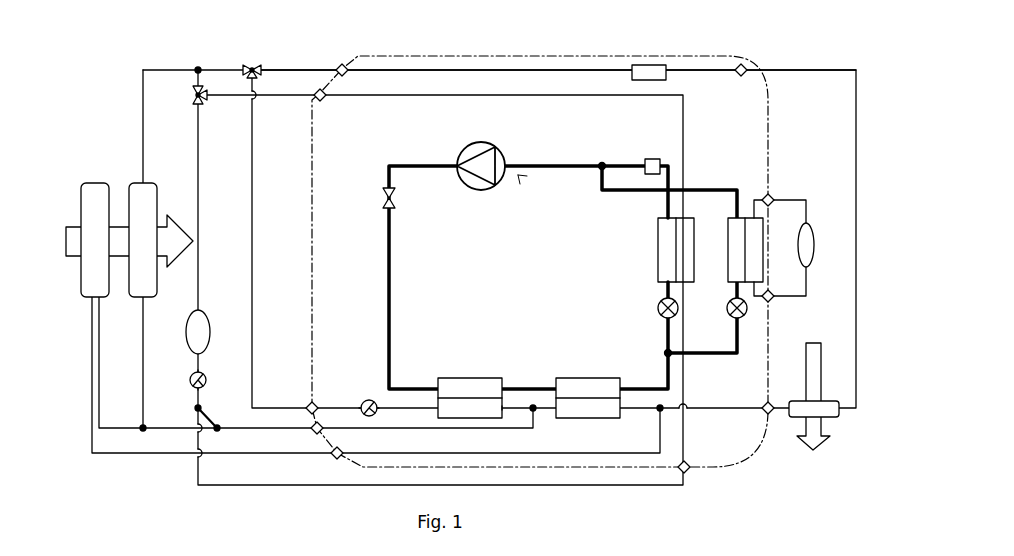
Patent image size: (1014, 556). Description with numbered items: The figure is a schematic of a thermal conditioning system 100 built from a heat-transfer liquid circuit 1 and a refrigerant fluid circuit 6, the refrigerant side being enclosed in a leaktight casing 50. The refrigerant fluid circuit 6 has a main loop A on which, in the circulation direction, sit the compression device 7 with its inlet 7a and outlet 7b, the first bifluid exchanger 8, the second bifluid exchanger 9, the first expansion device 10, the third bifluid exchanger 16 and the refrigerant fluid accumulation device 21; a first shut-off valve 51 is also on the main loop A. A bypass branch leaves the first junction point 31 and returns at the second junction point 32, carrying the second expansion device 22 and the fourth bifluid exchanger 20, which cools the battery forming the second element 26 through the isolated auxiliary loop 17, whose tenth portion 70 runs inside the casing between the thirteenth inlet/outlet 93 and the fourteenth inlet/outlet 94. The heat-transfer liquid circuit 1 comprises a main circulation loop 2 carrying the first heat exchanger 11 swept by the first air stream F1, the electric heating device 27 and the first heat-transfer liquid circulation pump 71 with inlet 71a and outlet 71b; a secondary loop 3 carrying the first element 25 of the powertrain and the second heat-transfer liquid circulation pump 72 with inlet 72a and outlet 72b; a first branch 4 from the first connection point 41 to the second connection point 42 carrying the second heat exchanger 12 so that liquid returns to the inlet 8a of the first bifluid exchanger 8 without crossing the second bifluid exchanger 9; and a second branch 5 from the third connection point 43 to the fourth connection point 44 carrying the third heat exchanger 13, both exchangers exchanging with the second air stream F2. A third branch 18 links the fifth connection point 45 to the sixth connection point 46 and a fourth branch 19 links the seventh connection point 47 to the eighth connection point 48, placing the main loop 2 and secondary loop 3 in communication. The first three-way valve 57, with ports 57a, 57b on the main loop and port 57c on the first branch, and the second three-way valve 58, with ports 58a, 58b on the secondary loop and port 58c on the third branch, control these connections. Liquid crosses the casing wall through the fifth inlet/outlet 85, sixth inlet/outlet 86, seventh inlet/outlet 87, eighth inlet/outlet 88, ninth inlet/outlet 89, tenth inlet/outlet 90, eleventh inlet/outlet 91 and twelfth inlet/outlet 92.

The thermal conditioning system 100 is at (433, 39).
The heat-transfer liquid circuit 1 is at (692, 105).
The main circulation loop 2 is at (854, 101).
The secondary loop 3 is at (440, 96).
The first branch 4 is at (141, 118).
The second branch 5 is at (90, 372).
The refrigerant fluid circuit 6 is at (521, 178).
The compression device 7 is at (476, 192).
The inlet of the compression device 7a is at (503, 160).
The outlet of the compression device 7b is at (456, 168).
The first bifluid exchanger 8 is at (640, 192).
The inlet of the first bifluid exchanger 8a is at (503, 404).
The second bifluid exchanger 9 is at (590, 380).
The first expansion device 10 is at (657, 308).
The first heat exchanger 11 is at (824, 414).
The second heat exchanger 12 is at (145, 202).
The third heat exchanger 13 is at (95, 215).
The third bifluid exchanger 16 is at (658, 250).
The auxiliary loop 17 is at (808, 278).
The third branch 18 is at (196, 82).
The fourth branch 19 is at (212, 410).
The fourth bifluid exchanger 20 is at (737, 255).
The refrigerant fluid accumulation device 21 is at (645, 162).
The second expansion device 22 is at (733, 300).
The first element of the electric powertrain 25 is at (203, 322).
The second element of the electric powertrain 26 is at (809, 240).
The electric heating device 27 is at (660, 74).
The first junction point 31 is at (672, 350).
The second junction point 32 is at (600, 168).
The first connection point 41 is at (258, 66).
The second connection point 42 is at (536, 410).
The third connection point 43 is at (141, 424).
The fourth connection point 44 is at (658, 410).
The fifth connection point 45 is at (196, 68).
The sixth connection point 46 is at (193, 98).
The seventh connection point 47 is at (194, 408).
The eighth connection point 48 is at (220, 426).
The casing 50 is at (770, 133).
The first shut-off valve 51 is at (395, 200).
The first three-way valve 57 is at (249, 63).
The first port of the first three-way valve 57a is at (256, 78).
The second port of the first three-way valve 57b is at (262, 70).
The third port of the first three-way valve 57c is at (243, 68).
The second three-way valve 58 is at (204, 101).
The first port of the second three-way valve 58a is at (197, 106).
The second port of the second three-way valve 58b is at (206, 93).
The third port of the second three-way valve 58c is at (194, 90).
The tenth portion 70 is at (742, 330).
The first heat-transfer liquid circulation pump 71 is at (366, 400).
The inlet of the first pump 71a is at (370, 400).
The outlet of the first pump 71b is at (362, 404).
The second heat-transfer liquid circulation pump 72 is at (204, 374).
The inlet of the second pump 72a is at (192, 383).
The outlet of the second pump 72b is at (192, 376).
The fifth inlet/outlet 85 is at (769, 415).
The sixth inlet/outlet 86 is at (310, 404).
The seventh inlet/outlet 87 is at (314, 430).
The eighth inlet/outlet 88 is at (335, 458).
The ninth inlet/outlet 89 is at (324, 98).
The tenth inlet/outlet 90 is at (688, 472).
The eleventh inlet/outlet 91 is at (344, 66).
The twelfth inlet/outlet 92 is at (745, 68).
The thirteenth inlet/outlet 93 is at (772, 198).
The fourteenth inlet/outlet 94 is at (772, 299).
The main loop A is at (392, 268).
The first air stream F1 is at (815, 448).
The second air stream F2 is at (70, 248).